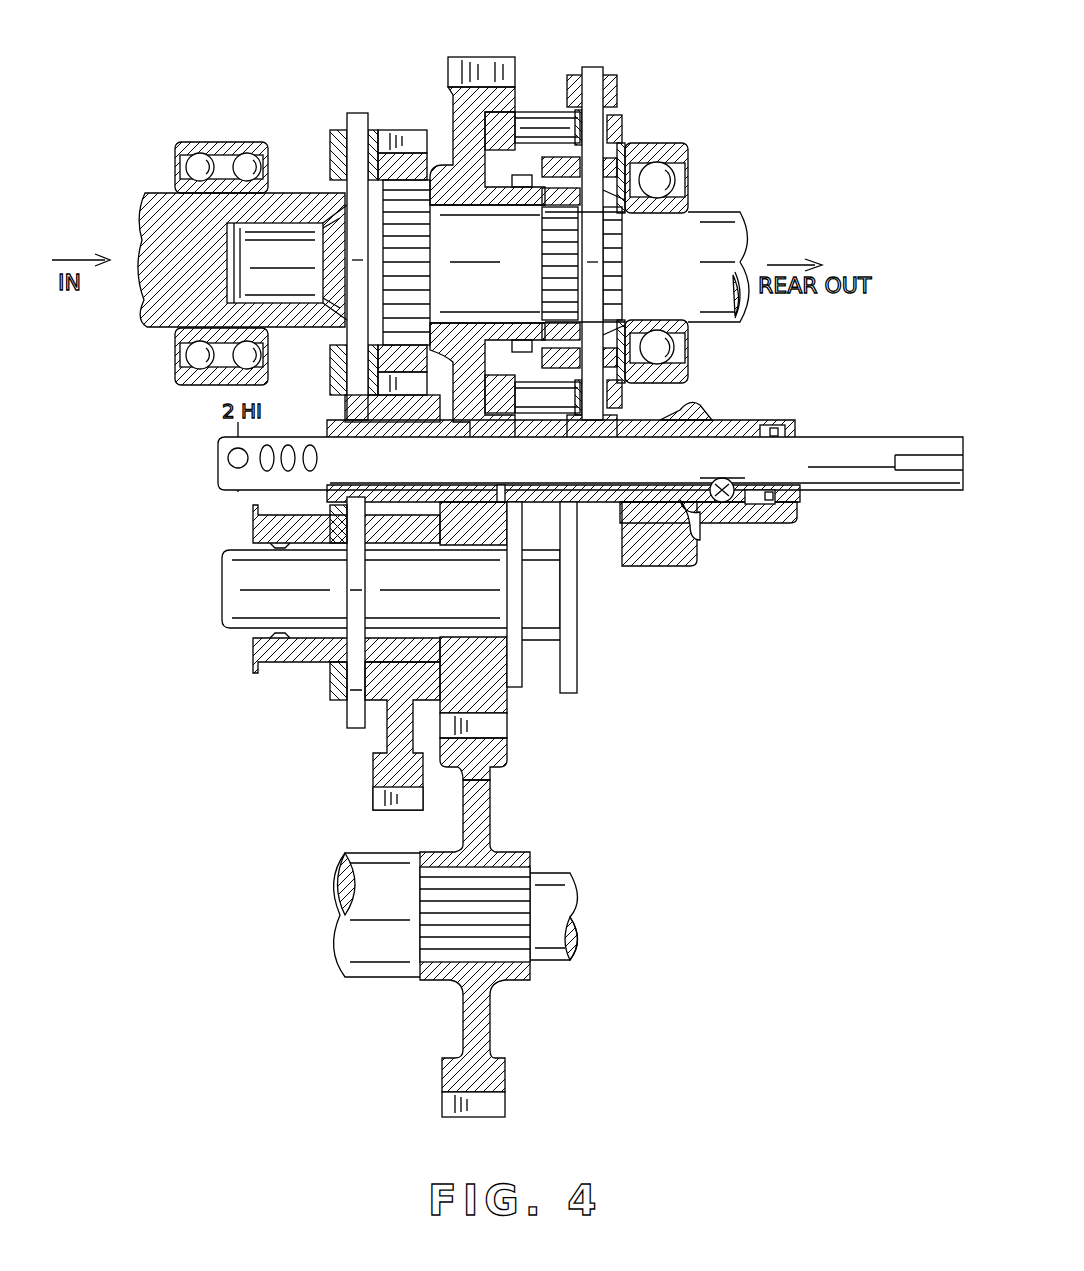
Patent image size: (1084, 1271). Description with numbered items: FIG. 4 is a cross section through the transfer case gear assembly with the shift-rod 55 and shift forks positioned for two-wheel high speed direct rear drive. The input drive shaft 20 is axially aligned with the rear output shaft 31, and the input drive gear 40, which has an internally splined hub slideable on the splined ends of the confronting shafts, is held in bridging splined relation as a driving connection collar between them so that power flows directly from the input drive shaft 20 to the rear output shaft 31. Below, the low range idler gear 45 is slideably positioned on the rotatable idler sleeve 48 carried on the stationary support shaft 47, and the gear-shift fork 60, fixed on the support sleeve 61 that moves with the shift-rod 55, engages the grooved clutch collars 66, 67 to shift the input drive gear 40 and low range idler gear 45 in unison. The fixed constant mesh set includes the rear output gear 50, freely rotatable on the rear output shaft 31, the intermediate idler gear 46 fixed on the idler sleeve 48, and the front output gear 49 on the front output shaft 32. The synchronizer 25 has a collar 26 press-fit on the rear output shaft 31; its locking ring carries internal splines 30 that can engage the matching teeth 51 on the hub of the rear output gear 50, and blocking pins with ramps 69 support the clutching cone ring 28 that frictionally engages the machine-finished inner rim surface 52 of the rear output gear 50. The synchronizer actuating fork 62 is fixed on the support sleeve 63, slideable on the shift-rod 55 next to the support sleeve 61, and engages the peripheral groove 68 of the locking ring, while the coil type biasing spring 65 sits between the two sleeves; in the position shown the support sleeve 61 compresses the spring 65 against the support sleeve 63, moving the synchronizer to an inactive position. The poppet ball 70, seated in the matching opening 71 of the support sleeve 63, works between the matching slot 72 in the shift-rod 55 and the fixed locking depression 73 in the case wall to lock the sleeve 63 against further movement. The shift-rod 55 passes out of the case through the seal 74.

The input drive shaft 20 is at (155, 326).
The synchronizer 25 is at (655, 115).
The collar 26 is at (620, 325).
The clutching cone ring 28 is at (505, 113).
The internal splines 30 is at (628, 178).
The rear output shaft 31 is at (735, 225).
The front output shaft 32 is at (572, 884).
The input drive gear 40 is at (403, 152).
The low range idler gear 45 is at (390, 702).
The intermediate idler gear 46 is at (507, 690).
The stationary support shaft 47 is at (245, 600).
The idler sleeve 48 is at (300, 662).
The front output gear 49 is at (487, 830).
The rear output gear 50 is at (465, 95).
The matching teeth 51 is at (517, 340).
The inner rim surface 52 is at (500, 108).
The shift-rod 55 is at (857, 440).
The gear-shift fork 60 is at (357, 118).
The support sleeve 61 is at (340, 418).
The synchronizer actuating fork 62 is at (594, 90).
The support sleeve 63 is at (708, 416).
The coil type biasing spring 65 is at (500, 490).
The grooved clutch collar 66 is at (330, 140).
The grooved clutch collar 67 is at (335, 697).
The peripheral groove 68 is at (612, 82).
The ramps 69 is at (575, 125).
The poppet ball 70 is at (702, 479).
The matching opening 71 is at (728, 500).
The matching slot 72 is at (698, 505).
The fixed locking depression 73 is at (680, 535).
The seal 74 is at (795, 505).